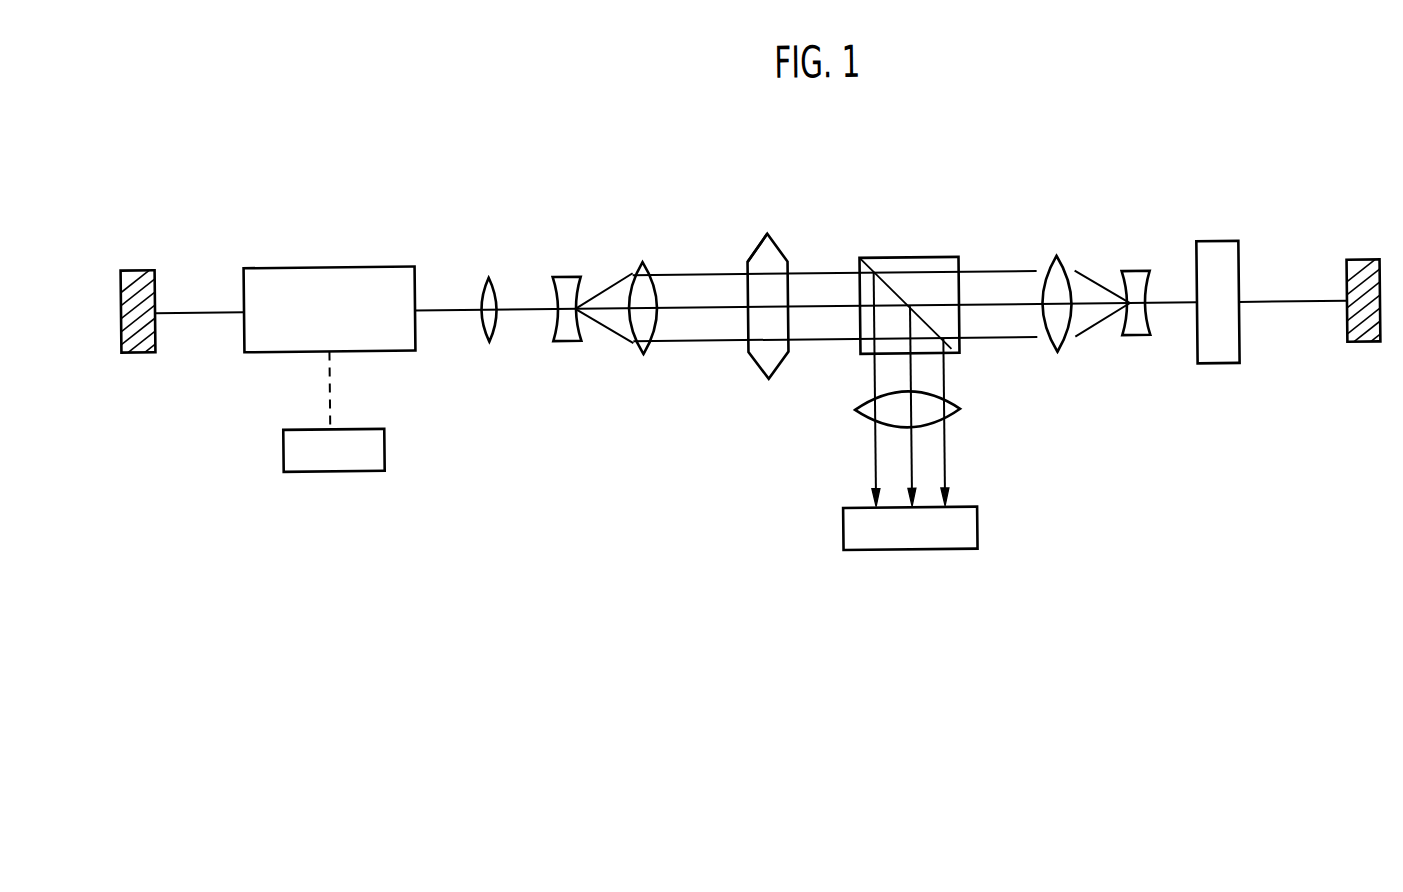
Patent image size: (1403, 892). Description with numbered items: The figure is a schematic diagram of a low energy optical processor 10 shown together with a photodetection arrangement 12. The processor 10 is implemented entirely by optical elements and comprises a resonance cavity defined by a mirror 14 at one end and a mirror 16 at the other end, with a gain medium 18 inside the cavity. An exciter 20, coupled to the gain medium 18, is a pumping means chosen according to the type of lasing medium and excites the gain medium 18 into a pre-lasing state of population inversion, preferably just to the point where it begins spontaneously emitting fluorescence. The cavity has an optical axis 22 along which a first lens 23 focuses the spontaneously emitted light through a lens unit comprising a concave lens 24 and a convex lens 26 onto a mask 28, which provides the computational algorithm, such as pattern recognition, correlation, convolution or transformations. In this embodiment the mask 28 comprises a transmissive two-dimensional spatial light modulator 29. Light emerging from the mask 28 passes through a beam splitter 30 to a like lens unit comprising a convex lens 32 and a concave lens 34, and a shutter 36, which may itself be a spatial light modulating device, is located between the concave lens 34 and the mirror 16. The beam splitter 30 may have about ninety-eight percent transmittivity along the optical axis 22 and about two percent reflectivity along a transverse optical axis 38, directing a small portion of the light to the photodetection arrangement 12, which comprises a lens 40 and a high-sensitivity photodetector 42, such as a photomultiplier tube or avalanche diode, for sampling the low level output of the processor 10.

The processor 10 is at (561, 198).
The photodetection arrangement 12 is at (825, 456).
The mirror 14 is at (139, 263).
The mirror 16 is at (1360, 351).
The gain medium 18 is at (363, 262).
The exciter 20 is at (384, 455).
The optical axis 22 is at (992, 304).
The first lens 23 is at (497, 332).
The concave lens 24 is at (569, 341).
The convex lens 26 is at (650, 349).
The mask 28 is at (752, 366).
The spatial light modulator 29 is at (750, 258).
The beam splitter 30 is at (962, 329).
The convex lens 32 is at (1068, 353).
The concave lens 34 is at (1137, 341).
The shutter 36 is at (1218, 370).
The transverse optical axis 38 is at (911, 472).
The lens 40 is at (951, 418).
The photodetector 42 is at (977, 528).